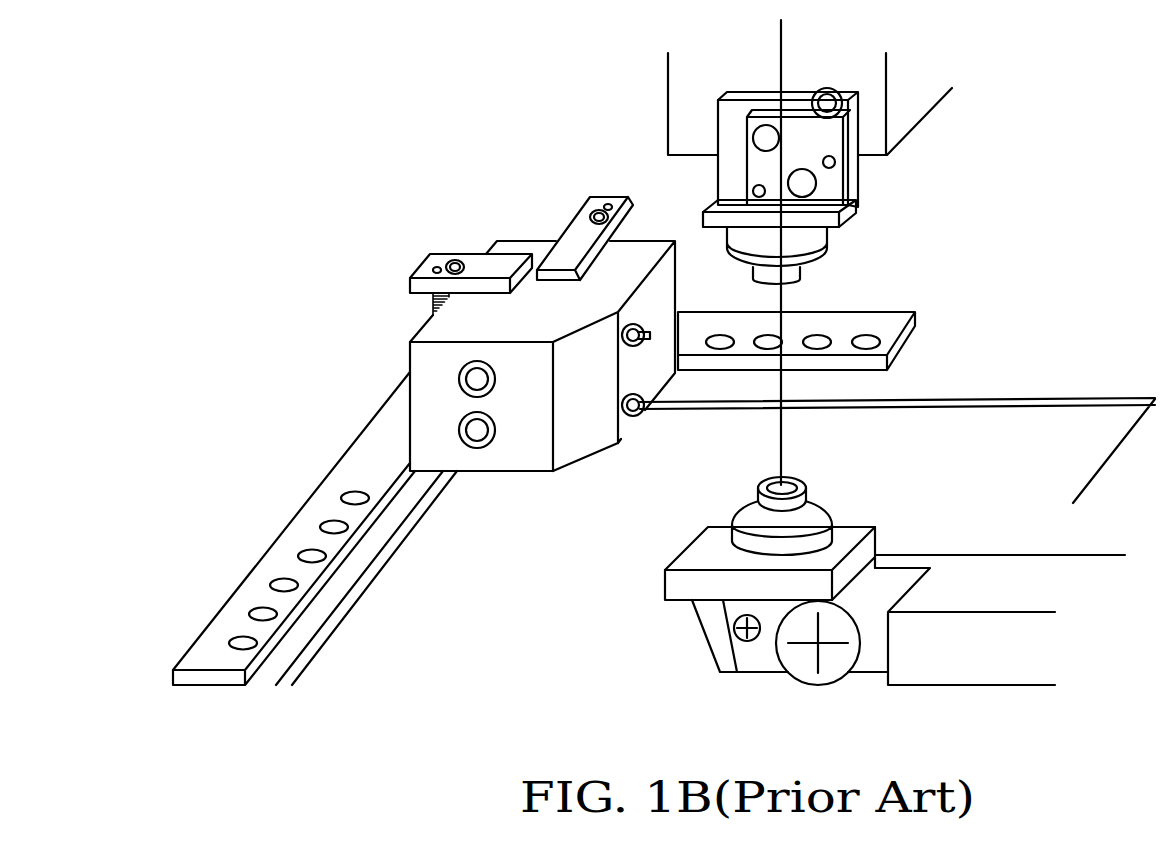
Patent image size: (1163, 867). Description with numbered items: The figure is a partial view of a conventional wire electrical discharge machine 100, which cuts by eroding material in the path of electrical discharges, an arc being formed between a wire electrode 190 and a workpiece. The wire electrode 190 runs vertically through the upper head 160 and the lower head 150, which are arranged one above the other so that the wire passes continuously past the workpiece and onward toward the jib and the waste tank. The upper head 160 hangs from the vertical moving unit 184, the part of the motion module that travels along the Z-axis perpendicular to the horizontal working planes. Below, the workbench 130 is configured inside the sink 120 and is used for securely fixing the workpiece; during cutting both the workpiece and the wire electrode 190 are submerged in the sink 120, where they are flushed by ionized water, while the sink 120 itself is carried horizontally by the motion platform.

The wire electrical discharge machine 100 is at (1112, 780).
The sink 120 is at (518, 580).
The workbench 130 is at (960, 367).
The lower head 150 is at (810, 508).
The upper head 160 is at (811, 255).
The vertical moving unit 184 is at (877, 80).
The wire electrode 190 is at (782, 440).